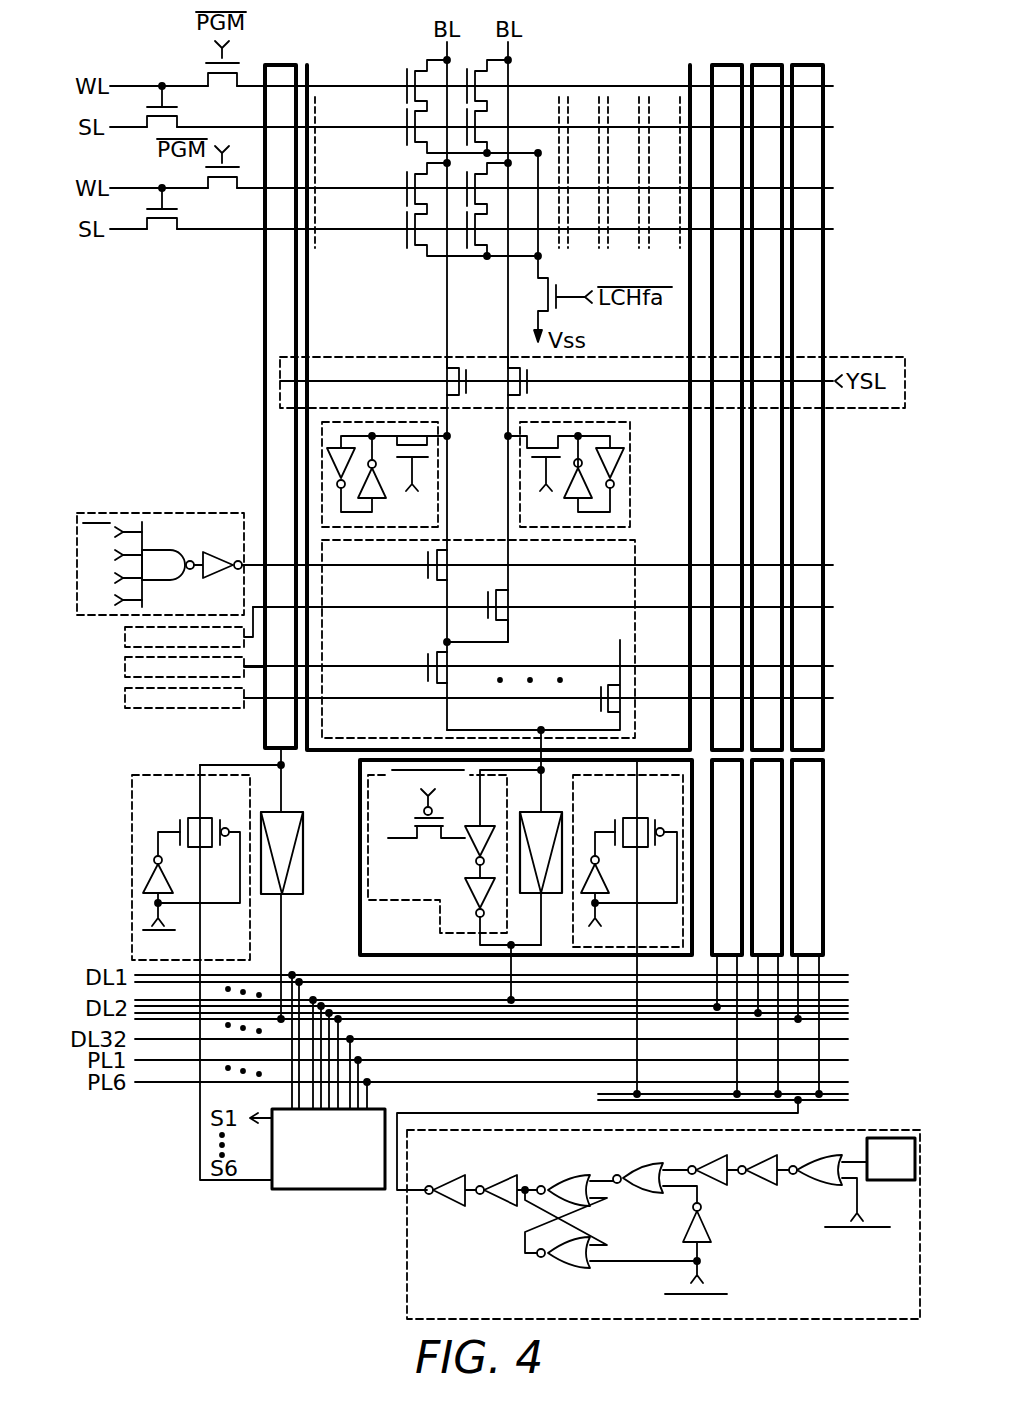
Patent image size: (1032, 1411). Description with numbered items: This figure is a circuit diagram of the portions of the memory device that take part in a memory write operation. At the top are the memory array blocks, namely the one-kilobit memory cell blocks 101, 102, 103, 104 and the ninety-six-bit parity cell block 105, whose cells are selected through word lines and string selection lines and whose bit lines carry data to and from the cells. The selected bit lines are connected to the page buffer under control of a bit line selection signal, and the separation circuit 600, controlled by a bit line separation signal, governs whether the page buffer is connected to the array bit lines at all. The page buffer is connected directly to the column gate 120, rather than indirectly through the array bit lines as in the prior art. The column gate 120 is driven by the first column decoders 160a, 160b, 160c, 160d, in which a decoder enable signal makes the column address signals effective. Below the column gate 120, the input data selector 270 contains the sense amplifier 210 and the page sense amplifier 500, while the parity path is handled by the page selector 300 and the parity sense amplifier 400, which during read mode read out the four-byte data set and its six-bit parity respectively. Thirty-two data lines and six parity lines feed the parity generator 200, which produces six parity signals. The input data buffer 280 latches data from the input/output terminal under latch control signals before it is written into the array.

The memory cell array block 101 is at (690, 78).
The memory cell array block 102 is at (727, 72).
The memory cell array block 103 is at (765, 70).
The memory cell array block 104 is at (803, 72).
The parity cell array block 105 is at (293, 82).
The column gate 120 is at (340, 741).
The first column decoder 160a is at (166, 513).
The first column decoder 160b is at (125, 637).
The first column decoder 160c is at (125, 667).
The first column decoder 160d is at (125, 698).
The parity generator 200 is at (328, 1192).
The sense amplifier 210 is at (555, 812).
The input data selector 270 is at (526, 902).
The input data buffer 280 is at (407, 1285).
The page selector 300 is at (132, 868).
The parity sense amplifier 400 is at (300, 896).
The page sense amplifier 500 is at (405, 900).
The separation circuit 600 is at (378, 357).